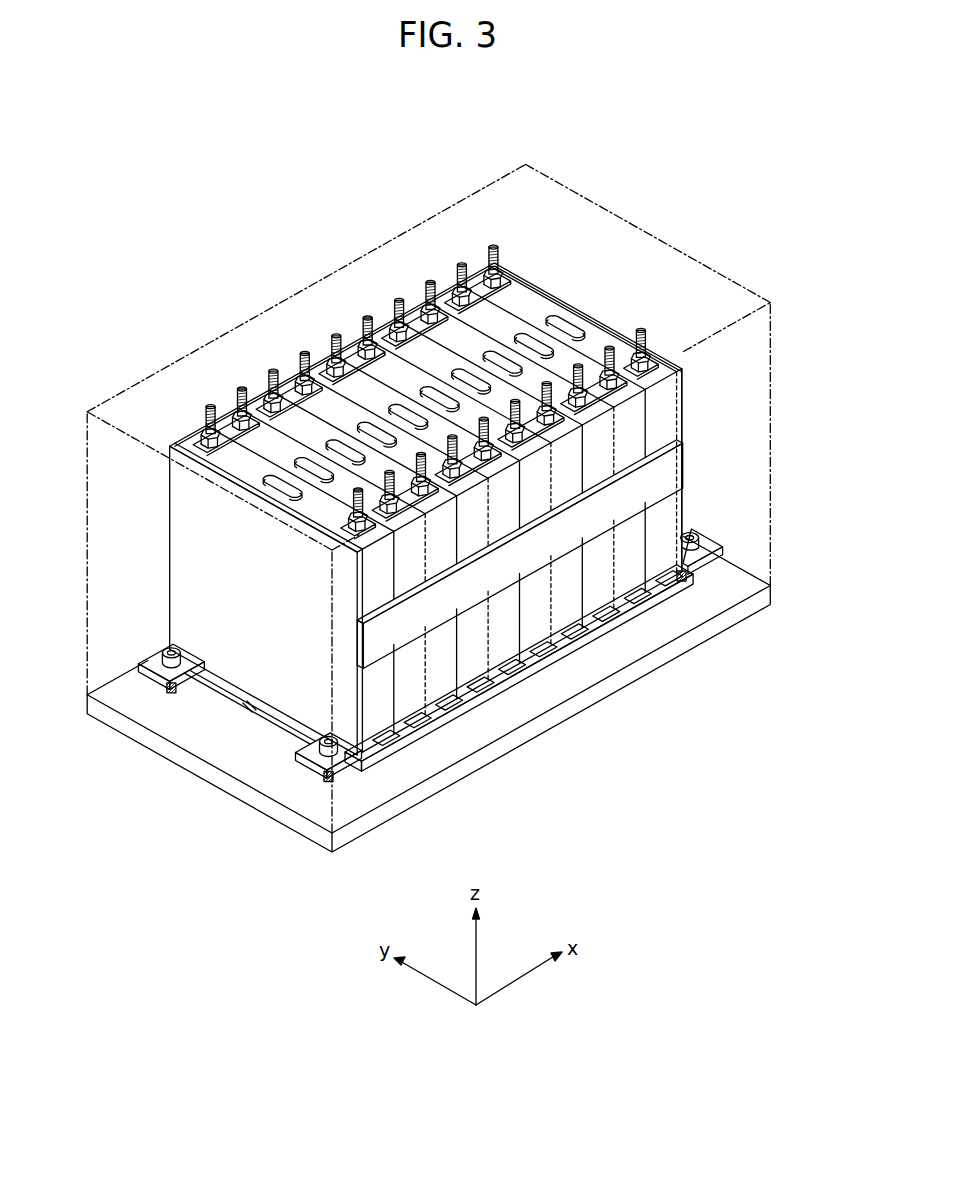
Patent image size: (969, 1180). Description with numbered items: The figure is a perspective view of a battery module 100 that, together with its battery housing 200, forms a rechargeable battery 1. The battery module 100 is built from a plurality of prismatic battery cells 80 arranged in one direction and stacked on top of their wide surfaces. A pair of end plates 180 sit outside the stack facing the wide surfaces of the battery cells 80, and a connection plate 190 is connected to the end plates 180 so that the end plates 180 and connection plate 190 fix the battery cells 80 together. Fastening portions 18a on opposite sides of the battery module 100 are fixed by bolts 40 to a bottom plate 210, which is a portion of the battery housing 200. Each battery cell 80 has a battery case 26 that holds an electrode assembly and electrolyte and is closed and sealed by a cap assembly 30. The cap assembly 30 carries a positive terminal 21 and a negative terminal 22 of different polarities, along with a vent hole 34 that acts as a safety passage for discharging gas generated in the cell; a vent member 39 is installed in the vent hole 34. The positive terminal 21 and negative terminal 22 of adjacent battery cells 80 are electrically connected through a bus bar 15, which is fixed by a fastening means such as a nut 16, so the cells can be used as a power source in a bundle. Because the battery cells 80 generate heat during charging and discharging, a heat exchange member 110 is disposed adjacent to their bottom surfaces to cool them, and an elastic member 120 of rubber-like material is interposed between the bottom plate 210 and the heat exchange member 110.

The rechargeable battery 1 is at (635, 185).
The battery housing 200 is at (404, 216).
The battery module 100 is at (332, 295).
The bottom plate 210 is at (607, 690).
The fastening portion 18a is at (150, 672).
The bolt 40 is at (320, 768).
The nut 16 is at (188, 452).
The battery case 26 is at (656, 549).
The battery cell 80 is at (606, 586).
The vent member 39 is at (572, 322).
The vent hole 34 is at (559, 322).
The cap assembly 30 is at (600, 346).
The bus bar 15 is at (206, 428).
The positive terminal 21 is at (495, 246).
The negative terminal 22 is at (644, 345).
The end plate 180 is at (699, 507).
The connection plate 190 is at (666, 468).
The heat exchange member 110 is at (477, 697).
The elastic member 120 is at (520, 682).